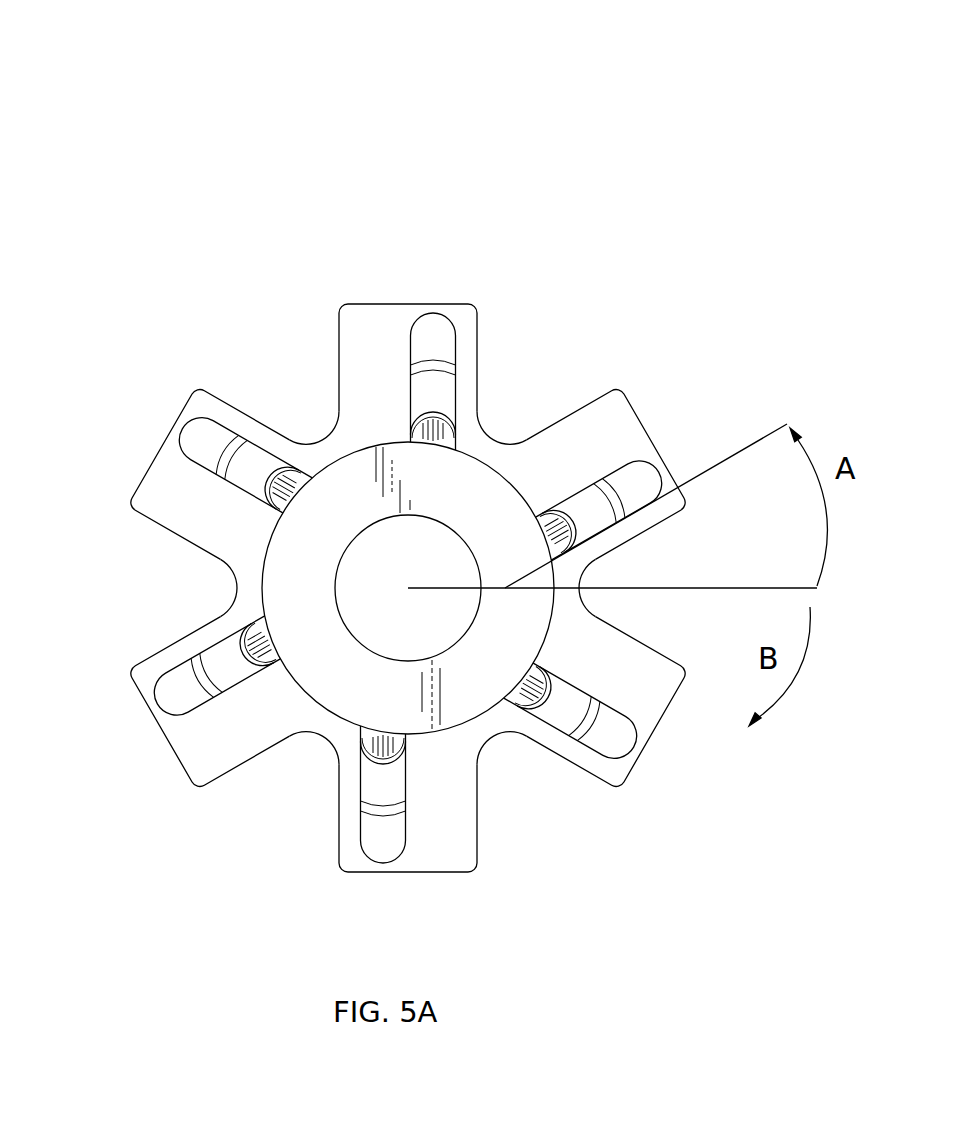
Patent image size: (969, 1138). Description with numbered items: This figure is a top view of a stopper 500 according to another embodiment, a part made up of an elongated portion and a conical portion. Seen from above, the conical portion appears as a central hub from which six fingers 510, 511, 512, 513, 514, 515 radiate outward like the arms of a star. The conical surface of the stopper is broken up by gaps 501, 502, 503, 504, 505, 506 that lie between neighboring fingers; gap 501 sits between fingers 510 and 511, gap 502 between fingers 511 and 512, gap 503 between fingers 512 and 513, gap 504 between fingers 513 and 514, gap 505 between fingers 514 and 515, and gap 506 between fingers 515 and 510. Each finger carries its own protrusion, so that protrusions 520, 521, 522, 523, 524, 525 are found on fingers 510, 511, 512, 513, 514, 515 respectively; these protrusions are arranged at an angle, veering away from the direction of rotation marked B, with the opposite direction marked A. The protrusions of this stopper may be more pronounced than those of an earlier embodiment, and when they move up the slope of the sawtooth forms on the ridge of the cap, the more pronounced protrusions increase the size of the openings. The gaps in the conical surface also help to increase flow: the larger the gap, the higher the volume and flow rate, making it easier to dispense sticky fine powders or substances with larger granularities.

The stopper 500 is at (158, 77).
The gap 501 is at (561, 382).
The gap 502 is at (684, 624).
The gap 503 is at (552, 810).
The gap 504 is at (316, 804).
The gap 505 is at (214, 599).
The gap 506 is at (319, 404).
The finger 510 is at (338, 330).
The finger 511 is at (715, 545).
The finger 512 is at (626, 781).
The finger 513 is at (440, 873).
The finger 514 is at (172, 748).
The finger 515 is at (130, 495).
The protrusion 520 is at (421, 314).
The protrusion 521 is at (643, 458).
The protrusion 522 is at (637, 748).
The protrusion 523 is at (378, 866).
The protrusion 524 is at (180, 668).
The protrusion 525 is at (175, 450).